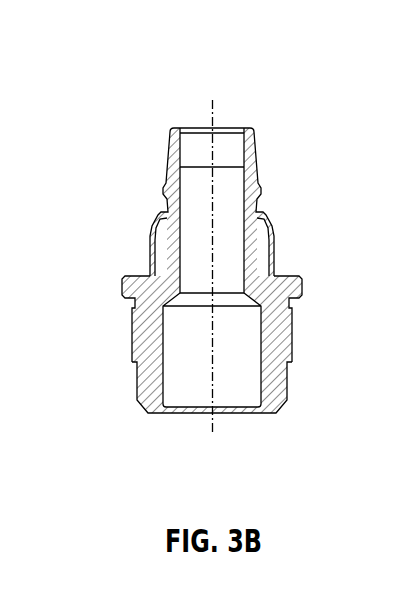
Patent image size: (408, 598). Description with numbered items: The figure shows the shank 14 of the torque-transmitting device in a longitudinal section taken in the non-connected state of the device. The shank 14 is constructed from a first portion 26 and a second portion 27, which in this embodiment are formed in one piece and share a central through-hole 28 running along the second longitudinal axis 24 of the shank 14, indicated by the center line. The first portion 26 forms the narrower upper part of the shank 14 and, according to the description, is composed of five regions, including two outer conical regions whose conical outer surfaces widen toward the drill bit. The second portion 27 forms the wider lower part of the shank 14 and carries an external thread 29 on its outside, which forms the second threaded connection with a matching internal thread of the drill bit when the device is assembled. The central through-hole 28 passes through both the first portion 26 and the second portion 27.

The shank 14 is at (190, 61).
The second longitudinal axis 24 is at (217, 193).
The first portion 26 is at (126, 201).
The second portion 27 is at (95, 329).
The central through-hole 28 is at (223, 391).
The external thread 29 is at (293, 340).